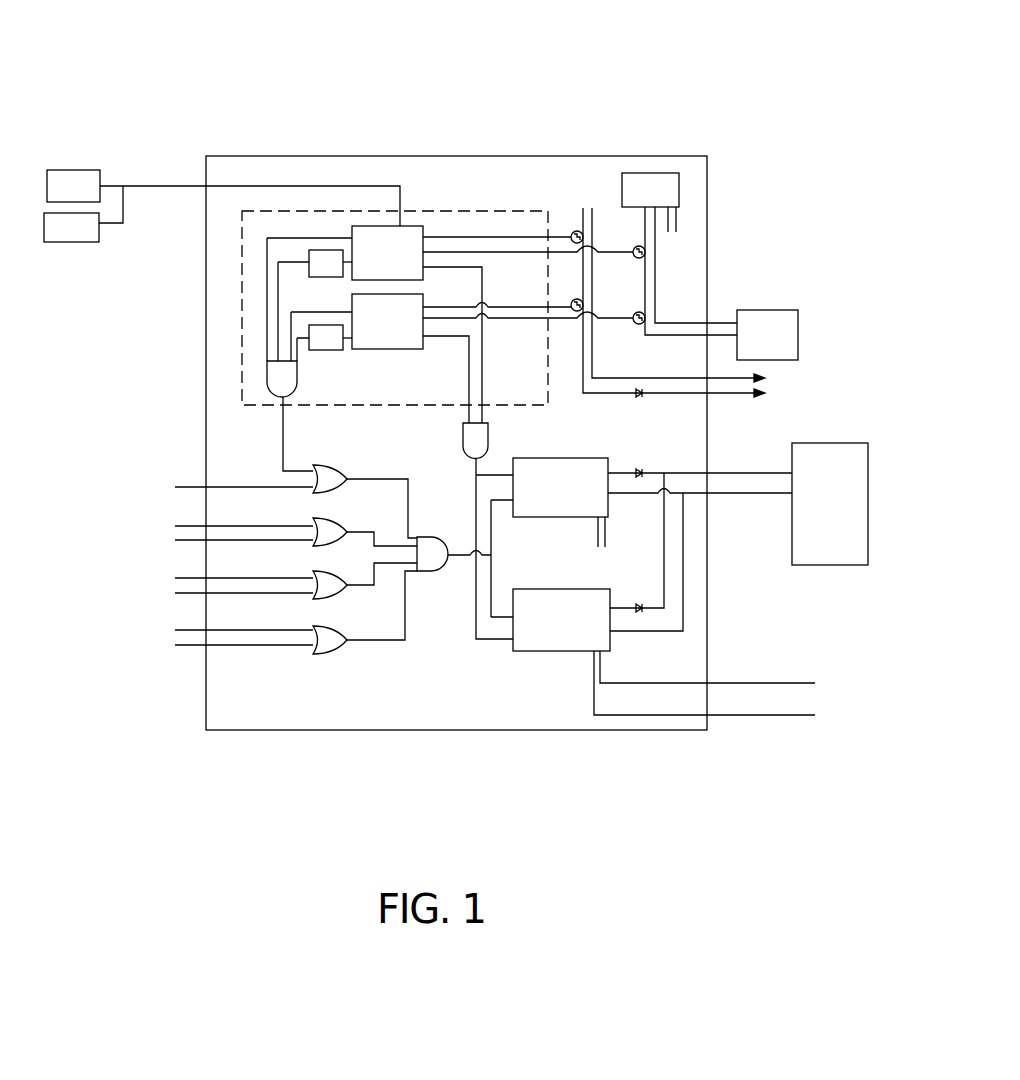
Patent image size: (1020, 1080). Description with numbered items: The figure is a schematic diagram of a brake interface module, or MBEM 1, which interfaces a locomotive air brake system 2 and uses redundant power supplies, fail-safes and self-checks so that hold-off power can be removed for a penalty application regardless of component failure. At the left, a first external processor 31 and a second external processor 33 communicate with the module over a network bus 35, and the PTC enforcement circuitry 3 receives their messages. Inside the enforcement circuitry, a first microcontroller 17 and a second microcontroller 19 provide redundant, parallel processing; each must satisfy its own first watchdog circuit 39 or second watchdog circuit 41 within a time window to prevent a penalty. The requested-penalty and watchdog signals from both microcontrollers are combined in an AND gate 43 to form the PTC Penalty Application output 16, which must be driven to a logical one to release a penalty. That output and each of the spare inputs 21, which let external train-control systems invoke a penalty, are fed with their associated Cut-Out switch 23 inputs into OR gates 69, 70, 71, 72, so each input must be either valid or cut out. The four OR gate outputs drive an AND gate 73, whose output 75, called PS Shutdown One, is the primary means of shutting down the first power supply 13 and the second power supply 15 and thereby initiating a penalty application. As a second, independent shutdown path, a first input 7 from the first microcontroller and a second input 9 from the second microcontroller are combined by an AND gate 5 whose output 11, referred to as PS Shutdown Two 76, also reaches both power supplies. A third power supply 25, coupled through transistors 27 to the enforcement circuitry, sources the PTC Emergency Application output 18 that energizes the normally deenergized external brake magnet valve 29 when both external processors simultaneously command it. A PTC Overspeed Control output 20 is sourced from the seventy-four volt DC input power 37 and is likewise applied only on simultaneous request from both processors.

The brake interface module (MBEM) 1 is at (533, 110).
The locomotive air brake system 2 is at (823, 443).
The PTC enforcement circuitry 3 is at (470, 211).
The AND gate 5 is at (463, 440).
The first input 7 is at (482, 415).
The second input 9 is at (469, 412).
The output 11 is at (470, 464).
The first power supply 13 is at (532, 651).
The second power supply 15 is at (542, 517).
The PTC Penalty Application output 16 is at (370, 442).
The first microcontroller 17 is at (410, 226).
The PTC Emergency Application output 18 is at (688, 362).
The second microcontroller 19 is at (352, 298).
The PTC Overspeed Control output 20 is at (618, 417).
The spare inputs 21 is at (68, 630).
The Cut-Out switch 23 is at (80, 651).
The third power supply 25 is at (679, 190).
The transistors 27 is at (645, 312).
The external brake magnet valve 29 is at (790, 338).
The first external processor 31 is at (80, 170).
The second external processor 33 is at (70, 242).
The network bus 35 is at (137, 168).
The 74 Vdc input power 37 is at (583, 177).
The first watchdog circuit 39 is at (318, 250).
The second watchdog circuit 41 is at (328, 352).
The AND gate 43 is at (267, 395).
The OR gate 69 is at (345, 466).
The OR gate 70 is at (335, 517).
The OR gate 71 is at (333, 572).
The OR gate 72 is at (333, 628).
The AND gate 73 is at (430, 572).
The output (PS Shutdown 1) 75 is at (491, 552).
The PS Shutdown 2 76 is at (488, 433).